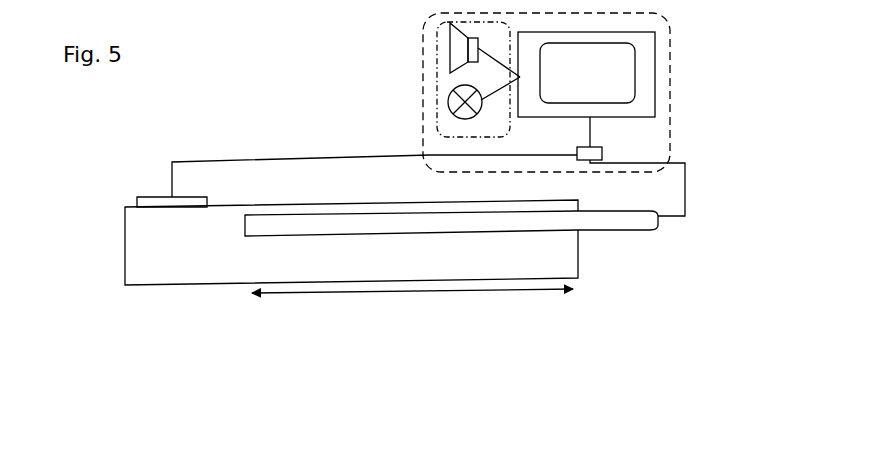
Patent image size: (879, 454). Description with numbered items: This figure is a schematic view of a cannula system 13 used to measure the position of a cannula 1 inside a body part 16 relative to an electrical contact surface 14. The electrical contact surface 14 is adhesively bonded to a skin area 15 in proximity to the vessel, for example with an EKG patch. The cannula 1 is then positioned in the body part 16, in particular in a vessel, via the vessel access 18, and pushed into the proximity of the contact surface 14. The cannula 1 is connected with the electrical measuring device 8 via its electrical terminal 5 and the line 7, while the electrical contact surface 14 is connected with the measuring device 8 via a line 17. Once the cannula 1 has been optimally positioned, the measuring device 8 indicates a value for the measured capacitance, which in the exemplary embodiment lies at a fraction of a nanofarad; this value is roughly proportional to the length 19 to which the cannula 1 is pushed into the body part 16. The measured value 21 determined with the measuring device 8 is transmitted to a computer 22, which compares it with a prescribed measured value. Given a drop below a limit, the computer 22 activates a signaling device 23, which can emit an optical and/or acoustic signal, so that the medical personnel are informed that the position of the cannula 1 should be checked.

The cannula 1 is at (625, 234).
The electrical terminal 5 is at (658, 220).
The line 7 is at (688, 175).
The measuring device 8 is at (606, 151).
The cannula system 13 is at (143, 165).
The electrical contact surface 14 is at (153, 196).
The skin area 15 is at (100, 205).
The body part 16 is at (188, 263).
The line 17 is at (313, 158).
The vessel access 18 is at (560, 234).
The length 19 is at (420, 292).
The measured value 21 is at (618, 57).
The computer 22 is at (673, 87).
The signaling device 23 is at (433, 78).